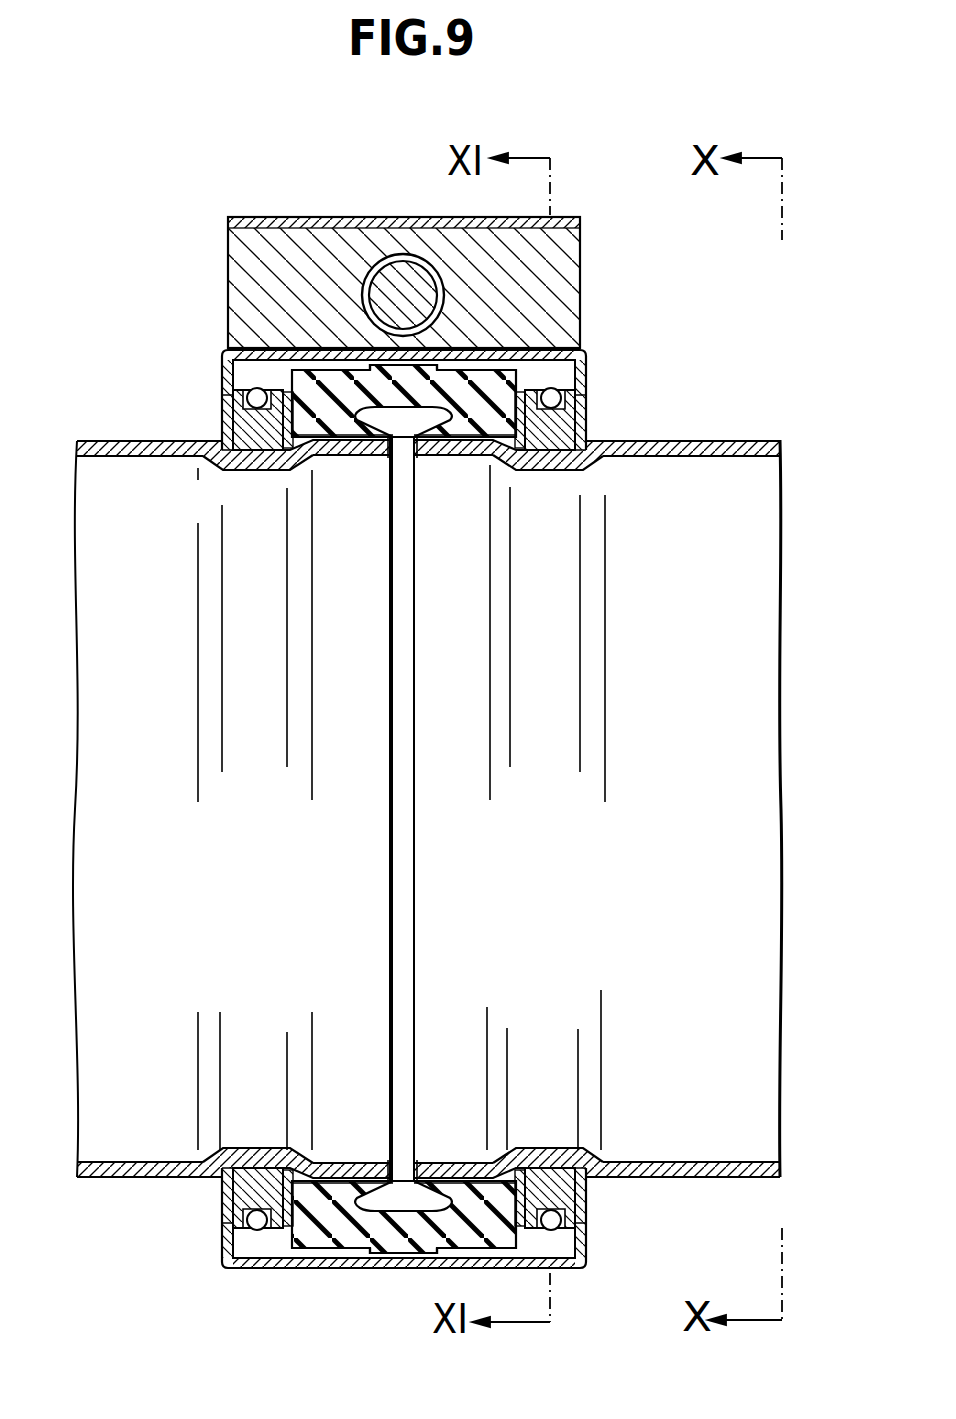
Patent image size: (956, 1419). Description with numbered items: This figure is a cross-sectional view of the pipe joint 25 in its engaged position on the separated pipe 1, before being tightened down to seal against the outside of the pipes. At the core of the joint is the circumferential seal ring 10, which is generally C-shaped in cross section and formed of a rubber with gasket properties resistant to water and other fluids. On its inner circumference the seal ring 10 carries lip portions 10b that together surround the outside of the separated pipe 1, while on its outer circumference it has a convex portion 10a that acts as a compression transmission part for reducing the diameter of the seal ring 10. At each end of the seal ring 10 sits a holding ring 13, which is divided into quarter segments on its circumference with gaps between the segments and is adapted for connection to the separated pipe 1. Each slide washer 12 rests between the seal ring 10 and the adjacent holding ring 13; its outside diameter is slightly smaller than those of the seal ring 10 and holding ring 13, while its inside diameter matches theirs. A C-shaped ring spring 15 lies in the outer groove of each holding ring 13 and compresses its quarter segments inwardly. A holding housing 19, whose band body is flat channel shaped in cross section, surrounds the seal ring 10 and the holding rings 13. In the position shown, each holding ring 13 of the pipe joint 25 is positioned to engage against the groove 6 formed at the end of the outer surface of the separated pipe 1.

The separated pipe 1 is at (110, 443).
The groove 6 is at (265, 462).
The seal ring 10 is at (470, 378).
The convex portion 10a is at (370, 366).
The lip portion 10b is at (350, 450).
The slide washer 12 is at (280, 388).
The holding ring 13 is at (237, 462).
The ring spring 15 is at (255, 395).
The holding housing 19 is at (291, 370).
The pipe joint 25 is at (640, 268).